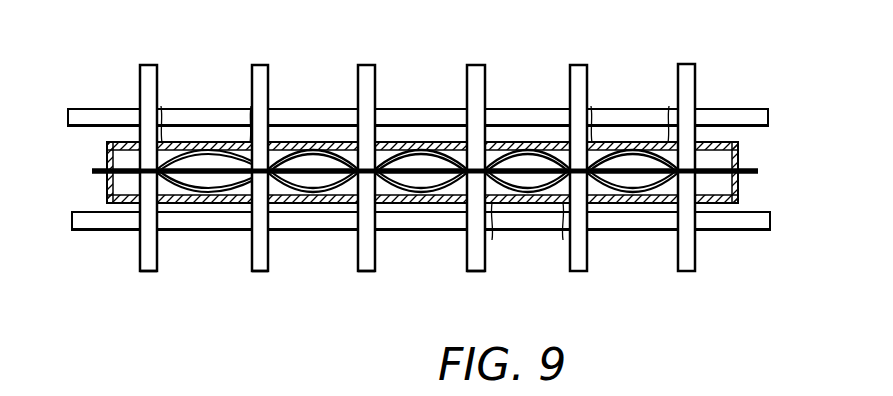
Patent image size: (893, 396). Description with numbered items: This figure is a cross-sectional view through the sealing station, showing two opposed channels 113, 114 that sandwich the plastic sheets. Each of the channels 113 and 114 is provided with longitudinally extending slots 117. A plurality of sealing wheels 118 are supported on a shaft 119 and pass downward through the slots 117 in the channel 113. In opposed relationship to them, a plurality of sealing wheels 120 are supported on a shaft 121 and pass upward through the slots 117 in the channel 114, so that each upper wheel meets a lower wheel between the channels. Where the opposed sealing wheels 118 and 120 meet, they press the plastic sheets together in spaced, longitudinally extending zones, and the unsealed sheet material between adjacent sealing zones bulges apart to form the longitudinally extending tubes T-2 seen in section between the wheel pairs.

The channel 113 is at (705, 140).
The channel 114 is at (728, 205).
The longitudinally extending slots 117 is at (251, 110).
The sealing wheels 118 is at (259, 64).
The shaft 119 is at (757, 127).
The sealing wheels 120 is at (260, 272).
The shaft 121 is at (746, 231).
The longitudinally extending tubes T-2 is at (411, 157).